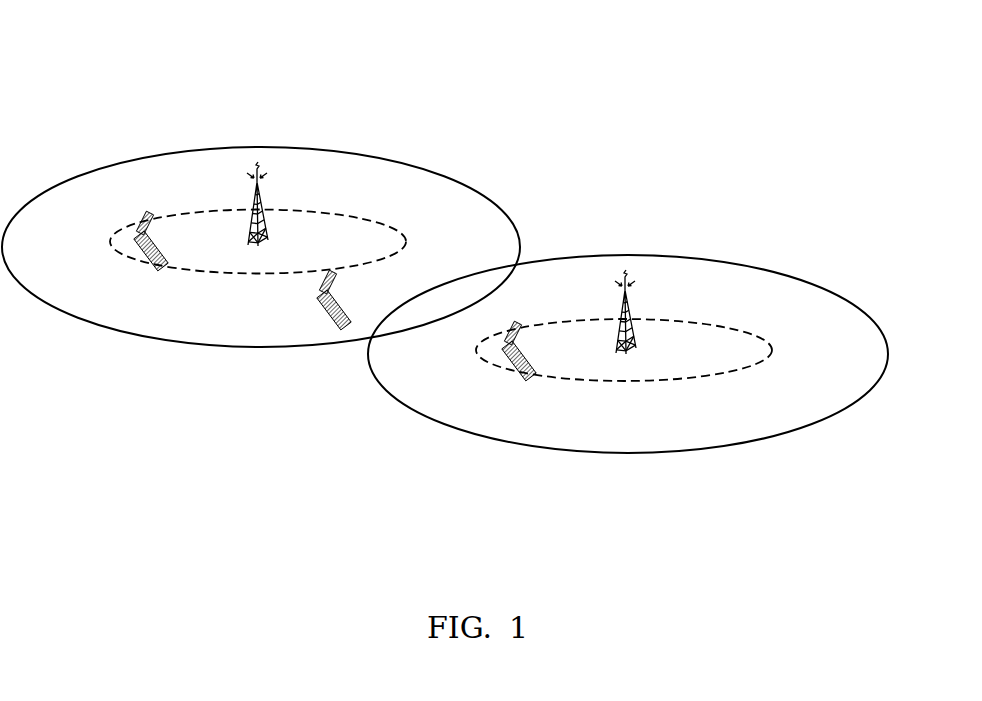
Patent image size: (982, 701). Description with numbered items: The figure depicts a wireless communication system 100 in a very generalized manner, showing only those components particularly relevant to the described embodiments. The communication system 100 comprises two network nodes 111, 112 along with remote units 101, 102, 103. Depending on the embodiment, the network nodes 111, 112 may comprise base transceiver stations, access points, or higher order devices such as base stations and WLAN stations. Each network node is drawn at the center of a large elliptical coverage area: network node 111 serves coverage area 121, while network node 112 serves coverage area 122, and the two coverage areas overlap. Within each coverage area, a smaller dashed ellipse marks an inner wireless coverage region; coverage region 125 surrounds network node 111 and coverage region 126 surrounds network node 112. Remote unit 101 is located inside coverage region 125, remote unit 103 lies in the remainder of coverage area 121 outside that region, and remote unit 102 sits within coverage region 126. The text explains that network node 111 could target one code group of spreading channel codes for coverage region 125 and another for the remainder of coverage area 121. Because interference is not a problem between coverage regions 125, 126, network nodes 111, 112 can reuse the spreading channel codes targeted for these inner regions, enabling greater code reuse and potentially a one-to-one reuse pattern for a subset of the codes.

The communication system 100 is at (86, 42).
The remote unit 101 is at (152, 264).
The remote unit 102 is at (518, 370).
The remote unit 103 is at (335, 318).
The network node 111 is at (248, 243).
The network node 112 is at (615, 352).
The coverage area 121 is at (65, 307).
The coverage area 122 is at (480, 437).
The coverage region 125 is at (267, 276).
The coverage region 126 is at (640, 382).